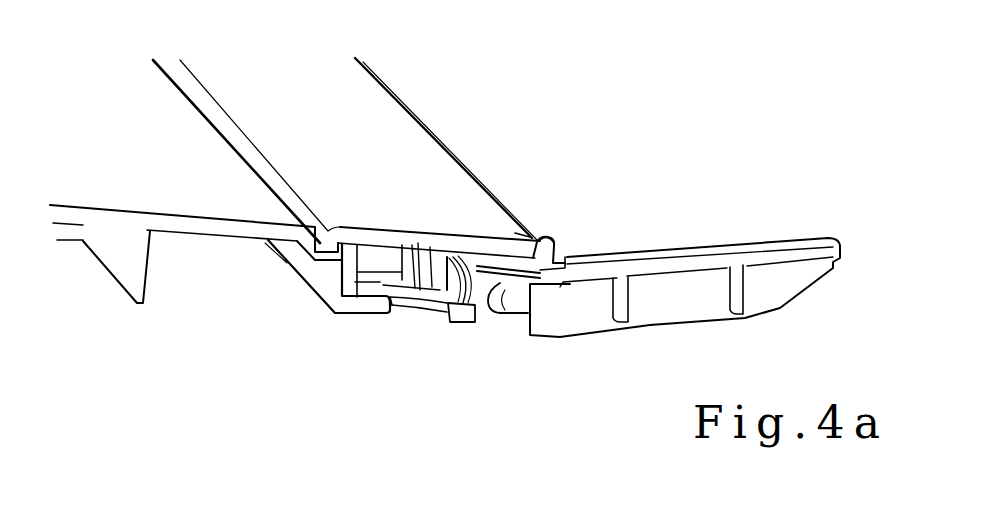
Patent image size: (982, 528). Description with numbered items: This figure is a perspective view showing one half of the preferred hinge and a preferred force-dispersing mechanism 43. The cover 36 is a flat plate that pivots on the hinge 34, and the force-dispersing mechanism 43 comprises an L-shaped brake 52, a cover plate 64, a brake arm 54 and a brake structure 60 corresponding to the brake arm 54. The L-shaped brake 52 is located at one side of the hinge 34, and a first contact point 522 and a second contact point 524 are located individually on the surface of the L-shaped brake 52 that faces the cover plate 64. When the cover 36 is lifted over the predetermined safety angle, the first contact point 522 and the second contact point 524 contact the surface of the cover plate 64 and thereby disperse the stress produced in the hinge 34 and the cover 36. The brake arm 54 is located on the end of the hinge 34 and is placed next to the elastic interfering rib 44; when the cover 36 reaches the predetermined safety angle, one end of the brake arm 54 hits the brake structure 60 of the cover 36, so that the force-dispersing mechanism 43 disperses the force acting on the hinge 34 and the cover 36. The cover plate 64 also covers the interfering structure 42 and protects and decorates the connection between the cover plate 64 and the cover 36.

The hinge 34 is at (722, 226).
The cover 36 is at (160, 190).
The interfering structure 42 is at (430, 292).
The force-dispersing mechanism 43 is at (597, 100).
The elastic interfering rib 44 is at (493, 313).
The L-shaped brake 52 is at (577, 248).
The brake arm 54 is at (448, 307).
The brake structure 60 is at (457, 325).
The cover plate 64 is at (393, 112).
The first contact point 522 is at (543, 238).
The second contact point 524 is at (522, 233).